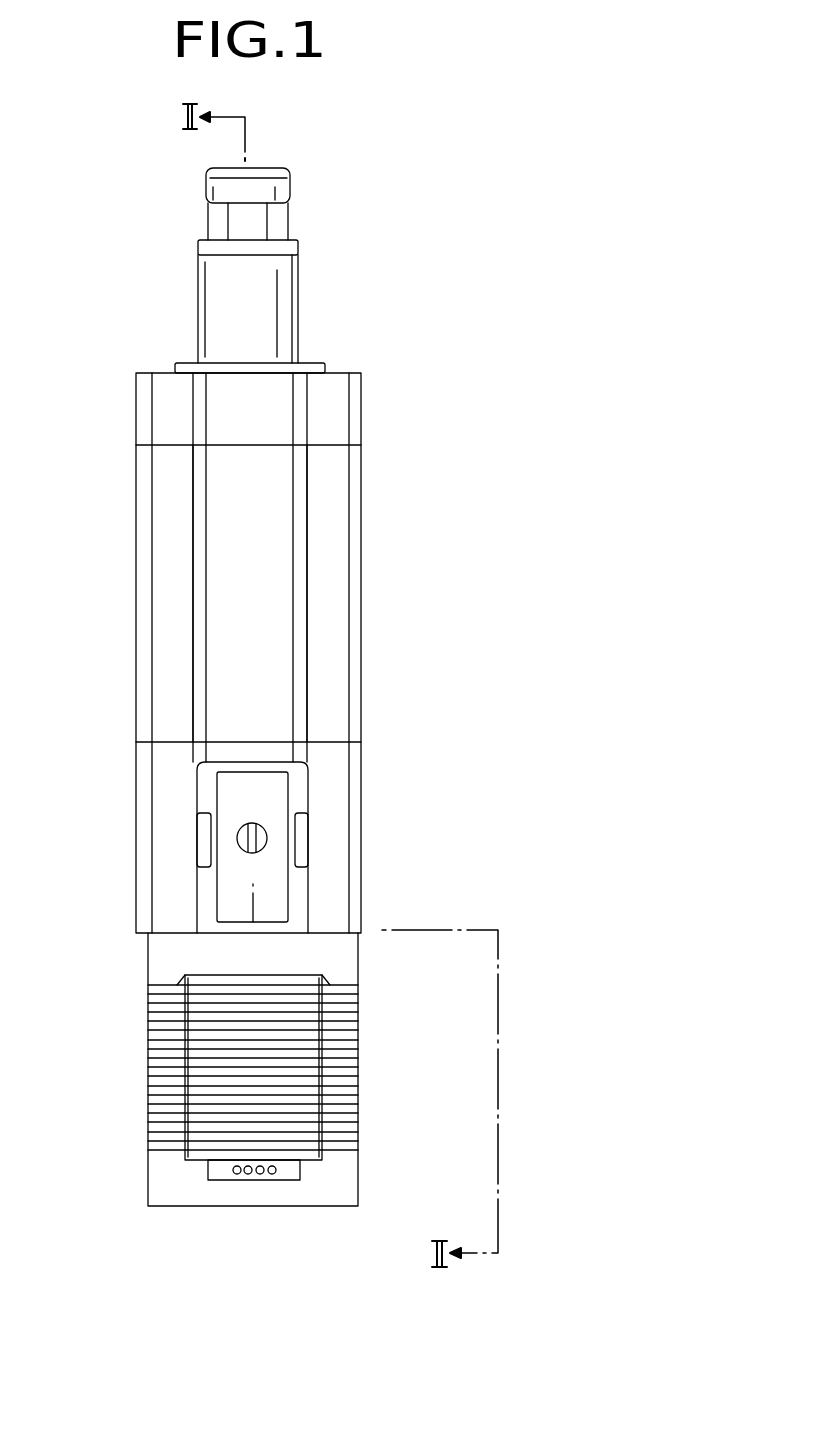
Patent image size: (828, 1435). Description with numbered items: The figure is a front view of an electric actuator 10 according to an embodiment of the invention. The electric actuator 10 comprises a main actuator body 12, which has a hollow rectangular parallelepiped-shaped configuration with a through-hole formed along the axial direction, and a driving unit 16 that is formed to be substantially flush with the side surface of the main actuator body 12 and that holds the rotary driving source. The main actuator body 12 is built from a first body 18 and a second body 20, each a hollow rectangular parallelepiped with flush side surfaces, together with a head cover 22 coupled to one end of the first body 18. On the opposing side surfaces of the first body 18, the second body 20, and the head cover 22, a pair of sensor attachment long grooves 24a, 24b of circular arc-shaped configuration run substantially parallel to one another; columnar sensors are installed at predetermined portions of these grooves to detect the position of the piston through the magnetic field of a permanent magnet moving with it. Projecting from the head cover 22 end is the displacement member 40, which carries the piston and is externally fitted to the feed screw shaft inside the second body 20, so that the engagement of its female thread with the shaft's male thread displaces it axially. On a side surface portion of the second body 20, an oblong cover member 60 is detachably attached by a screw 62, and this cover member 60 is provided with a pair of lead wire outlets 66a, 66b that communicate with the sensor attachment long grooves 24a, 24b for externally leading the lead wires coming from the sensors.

The electric actuator 10 is at (342, 232).
The main actuator body 12 is at (365, 673).
The driving unit 16 is at (358, 1053).
The first body 18 is at (323, 527).
The second body 20 is at (330, 832).
The head cover 22 is at (325, 417).
The sensor attachment long groove 24a is at (196, 540).
The sensor attachment long groove 24b is at (305, 711).
The displacement member 40 is at (275, 297).
The cover member 60 is at (267, 798).
The screw 62 is at (236, 842).
The lead wire outlet 66a is at (205, 850).
The lead wire outlet 66b is at (305, 850).